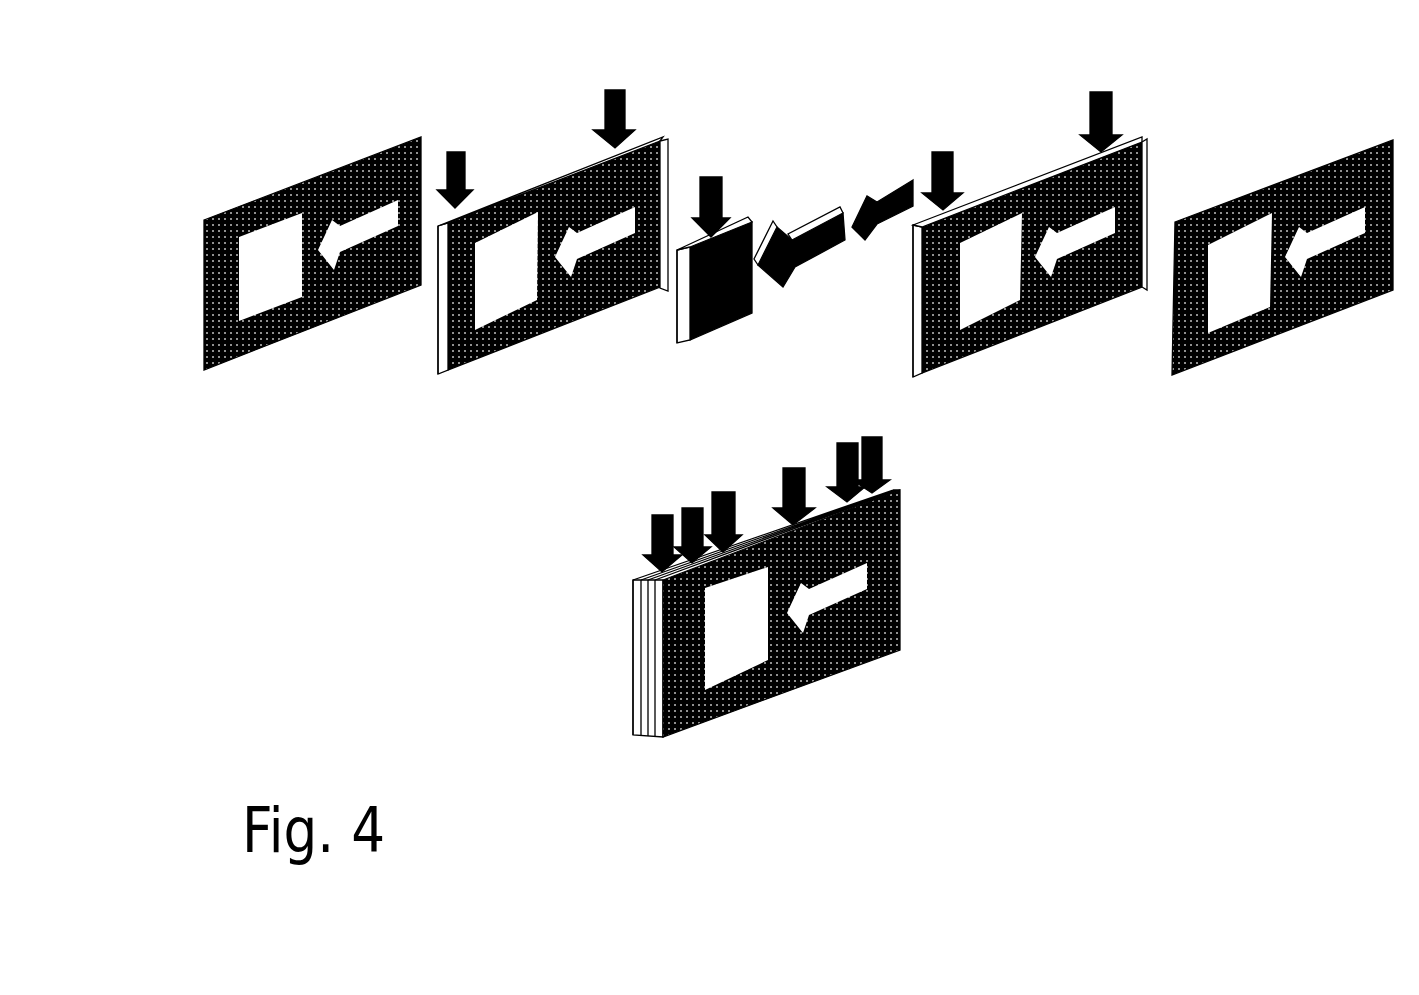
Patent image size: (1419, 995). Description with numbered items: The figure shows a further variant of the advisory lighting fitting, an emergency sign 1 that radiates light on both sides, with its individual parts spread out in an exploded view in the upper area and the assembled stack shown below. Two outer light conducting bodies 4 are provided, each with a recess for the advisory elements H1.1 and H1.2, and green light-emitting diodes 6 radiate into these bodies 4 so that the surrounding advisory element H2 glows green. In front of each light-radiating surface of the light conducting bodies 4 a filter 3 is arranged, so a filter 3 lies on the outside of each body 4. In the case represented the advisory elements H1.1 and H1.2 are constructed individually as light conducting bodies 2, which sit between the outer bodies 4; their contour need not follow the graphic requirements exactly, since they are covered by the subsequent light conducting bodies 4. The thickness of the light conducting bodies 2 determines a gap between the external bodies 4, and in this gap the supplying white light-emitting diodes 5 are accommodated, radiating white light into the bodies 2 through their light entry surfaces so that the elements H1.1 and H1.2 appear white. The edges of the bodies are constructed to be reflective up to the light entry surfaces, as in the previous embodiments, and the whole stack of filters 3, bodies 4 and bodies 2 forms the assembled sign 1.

The sign 1 is at (718, 773).
The light conducting body 2 is at (835, 283).
The filter 3 is at (405, 338).
The light conducting body 4 is at (658, 335).
The light-emitting diode 5 is at (720, 177).
The light-emitting diode 6 is at (465, 152).
The advisory element H1.1 is at (752, 227).
The advisory element H1.2 is at (823, 223).
The advisory element H2 is at (450, 370).